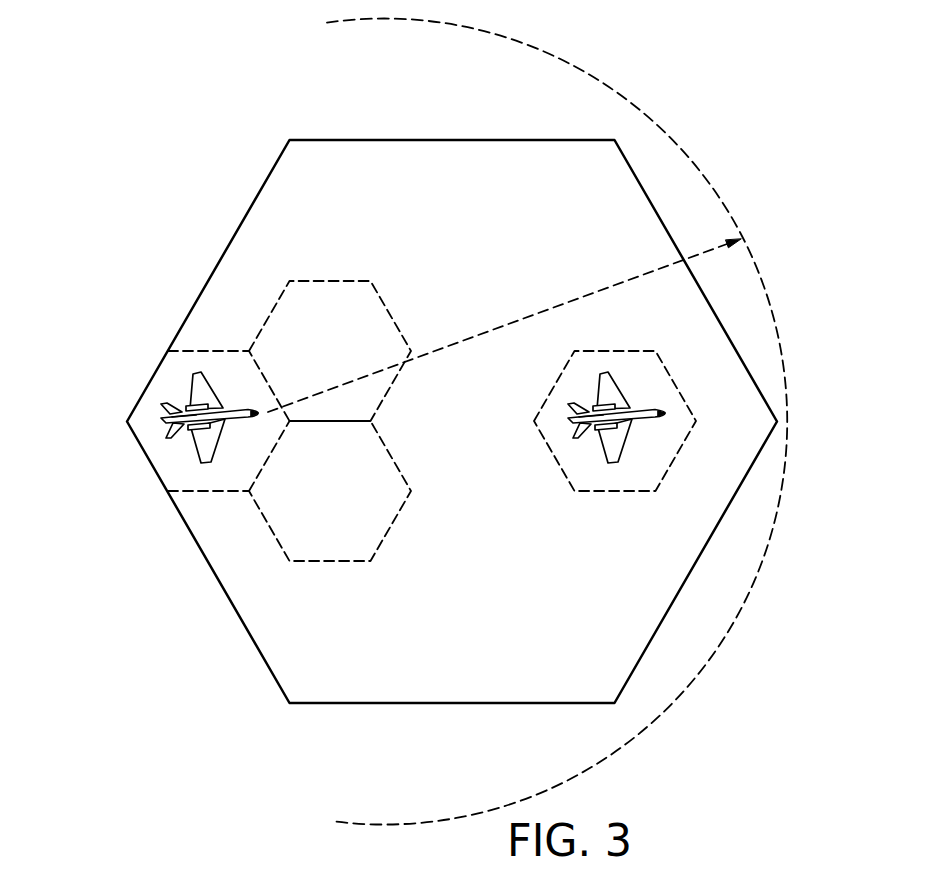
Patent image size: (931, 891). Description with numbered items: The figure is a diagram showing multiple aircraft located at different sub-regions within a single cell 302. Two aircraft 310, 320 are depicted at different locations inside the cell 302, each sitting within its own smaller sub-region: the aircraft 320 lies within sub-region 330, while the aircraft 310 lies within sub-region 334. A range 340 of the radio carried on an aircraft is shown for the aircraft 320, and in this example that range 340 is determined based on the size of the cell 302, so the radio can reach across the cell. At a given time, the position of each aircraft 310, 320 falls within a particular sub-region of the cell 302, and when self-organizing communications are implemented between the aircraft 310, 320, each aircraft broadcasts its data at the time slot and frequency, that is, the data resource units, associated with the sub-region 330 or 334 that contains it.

The cell 302 is at (708, 538).
The aircraft 310 is at (642, 406).
The aircraft 320 is at (162, 416).
The sub-region 330 is at (182, 494).
The sub-region 334 is at (547, 445).
The range 340 is at (535, 314).